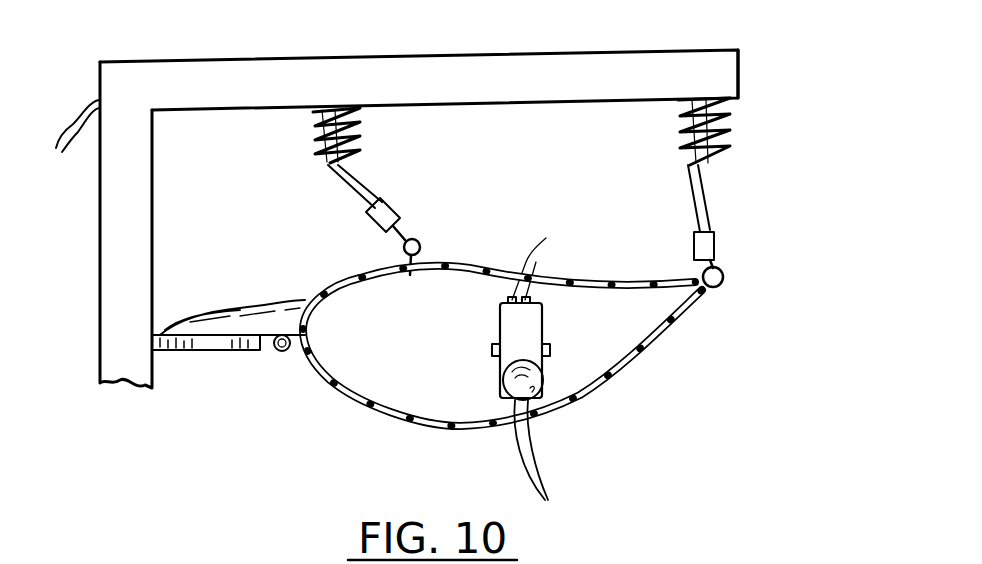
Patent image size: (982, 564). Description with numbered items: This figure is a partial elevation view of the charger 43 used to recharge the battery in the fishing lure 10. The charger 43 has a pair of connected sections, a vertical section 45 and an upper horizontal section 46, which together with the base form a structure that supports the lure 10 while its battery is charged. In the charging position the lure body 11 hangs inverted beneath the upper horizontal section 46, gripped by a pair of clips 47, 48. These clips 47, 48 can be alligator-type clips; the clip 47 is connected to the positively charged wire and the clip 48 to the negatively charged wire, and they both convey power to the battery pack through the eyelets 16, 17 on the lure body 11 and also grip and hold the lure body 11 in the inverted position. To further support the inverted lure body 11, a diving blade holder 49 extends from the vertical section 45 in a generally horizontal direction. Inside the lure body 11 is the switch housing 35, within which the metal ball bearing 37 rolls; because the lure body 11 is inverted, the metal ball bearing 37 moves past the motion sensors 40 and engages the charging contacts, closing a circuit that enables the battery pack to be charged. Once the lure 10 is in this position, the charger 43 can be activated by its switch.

The lure 10 is at (427, 398).
The lure body 11 is at (358, 408).
The eyelet 16 is at (424, 246).
The eyelet 17 is at (712, 290).
The switch housing 35 is at (505, 300).
The metal ball bearing 37 is at (504, 381).
The motion sensors 40 is at (596, 335).
The charger 43 is at (270, 58).
The vertical section 45 is at (105, 290).
The upper horizontal section 46 is at (717, 64).
The clip 47 is at (400, 222).
The clip 48 is at (546, 238).
The diving blade holder 49 is at (205, 350).